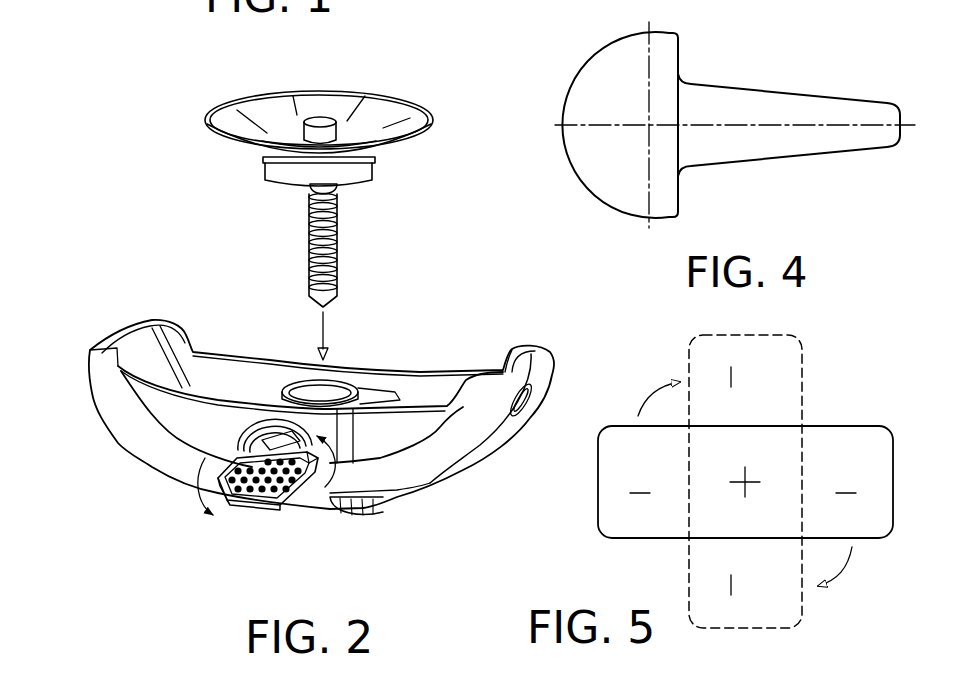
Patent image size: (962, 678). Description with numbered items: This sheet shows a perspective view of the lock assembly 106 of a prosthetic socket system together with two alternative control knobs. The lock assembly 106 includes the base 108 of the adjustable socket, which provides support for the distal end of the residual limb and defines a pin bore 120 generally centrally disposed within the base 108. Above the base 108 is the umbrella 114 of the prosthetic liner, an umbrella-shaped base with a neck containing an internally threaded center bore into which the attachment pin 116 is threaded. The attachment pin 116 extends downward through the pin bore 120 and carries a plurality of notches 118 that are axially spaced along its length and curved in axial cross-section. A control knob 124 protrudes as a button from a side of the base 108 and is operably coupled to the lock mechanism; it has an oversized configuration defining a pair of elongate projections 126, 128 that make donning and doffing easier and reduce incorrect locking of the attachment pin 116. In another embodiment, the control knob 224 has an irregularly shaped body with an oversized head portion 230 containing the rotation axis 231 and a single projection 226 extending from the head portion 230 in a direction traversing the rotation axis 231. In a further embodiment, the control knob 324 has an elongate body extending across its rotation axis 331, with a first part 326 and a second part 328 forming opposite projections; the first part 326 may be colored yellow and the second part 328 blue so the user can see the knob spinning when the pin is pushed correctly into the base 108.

In FIG. 2, the lock assembly 106 is at (92, 13).
In FIG. 2, the umbrella 114 is at (216, 102).
In FIG. 2, the attachment pin 116 is at (303, 233).
In FIG. 2, the notches 118 is at (337, 236).
In FIG. 2, the pin bore 120 is at (333, 390).
In FIG. 2, the base 108 is at (552, 386).
In FIG. 2, the control knob 124 is at (299, 509).
In FIG. 2, the projection 126 is at (380, 510).
In FIG. 2, the projection 128 is at (226, 497).
In FIG. 4, the control knob 224 is at (688, 122).
In FIG. 4, the single projection 226 is at (812, 108).
In FIG. 4, the head portion 230 is at (618, 148).
In FIG. 4, the rotation axis 231 is at (650, 124).
In FIG. 5, the control knob 324 is at (821, 389).
In FIG. 5, the first part 326 is at (612, 483).
In FIG. 5, the second part 328 is at (712, 475).
In FIG. 5, the rotation axis 331 is at (744, 483).